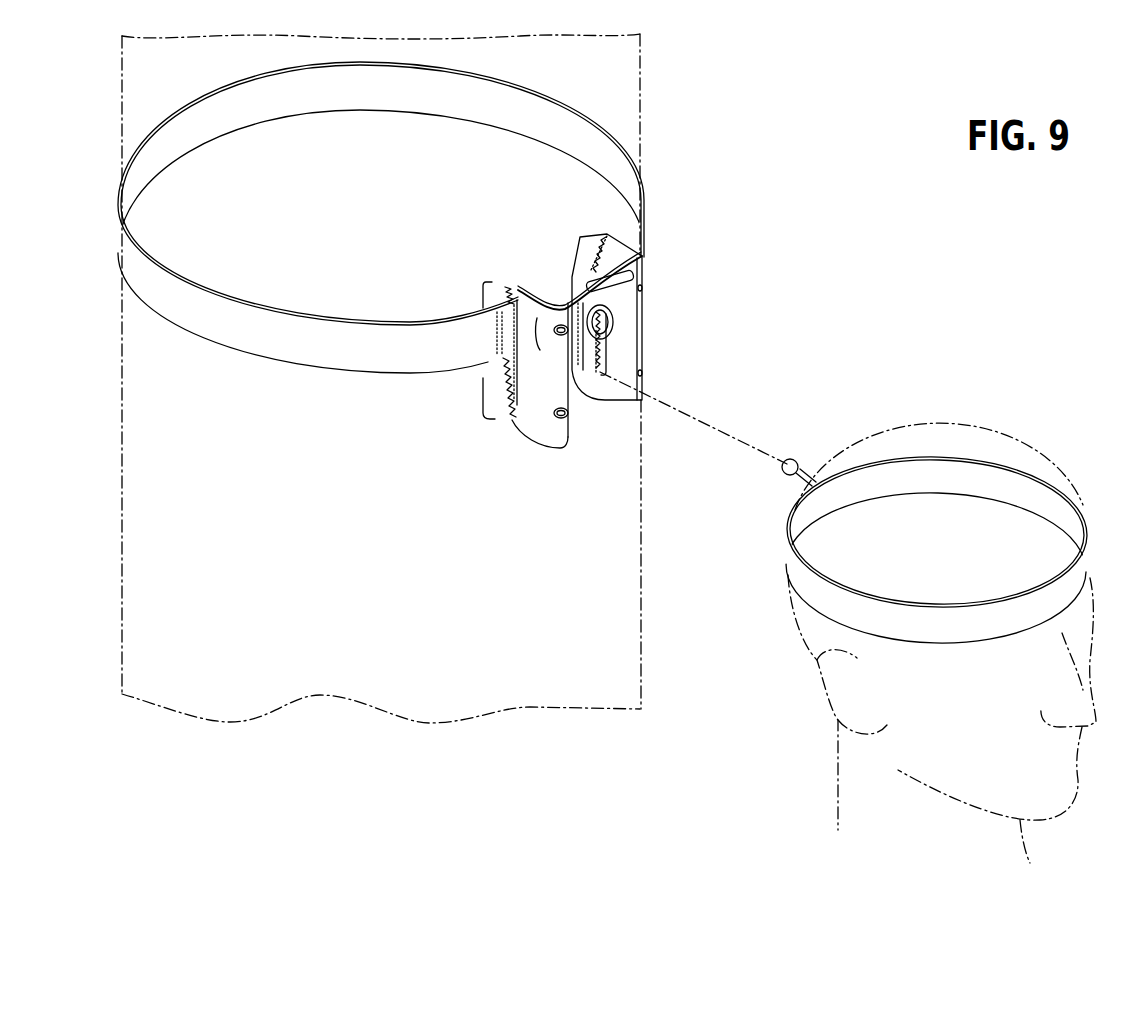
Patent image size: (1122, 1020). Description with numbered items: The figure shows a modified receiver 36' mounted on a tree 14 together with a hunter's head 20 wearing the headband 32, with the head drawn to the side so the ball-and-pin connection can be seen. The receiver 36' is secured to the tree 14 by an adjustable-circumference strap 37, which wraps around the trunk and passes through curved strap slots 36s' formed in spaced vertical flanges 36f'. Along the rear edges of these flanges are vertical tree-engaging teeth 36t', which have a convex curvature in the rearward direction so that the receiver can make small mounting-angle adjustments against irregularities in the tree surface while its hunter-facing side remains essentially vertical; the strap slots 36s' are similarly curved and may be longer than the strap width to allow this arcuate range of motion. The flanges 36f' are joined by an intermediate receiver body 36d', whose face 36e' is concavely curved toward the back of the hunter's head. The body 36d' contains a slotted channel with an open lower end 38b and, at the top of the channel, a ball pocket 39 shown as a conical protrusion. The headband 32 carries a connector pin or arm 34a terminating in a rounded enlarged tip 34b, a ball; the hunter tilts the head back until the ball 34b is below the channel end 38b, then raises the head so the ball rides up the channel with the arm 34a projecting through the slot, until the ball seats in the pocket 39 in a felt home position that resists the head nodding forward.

The tree 14 is at (640, 78).
The adjustable-circumference strap 37 is at (617, 160).
The modified receiver 36' is at (569, 251).
The intermediate receiver body 36d' is at (504, 327).
The tree-engaging teeth 36t' is at (489, 308).
The vertical flanges 36f' is at (566, 310).
The ball pocket 39 is at (603, 312).
The face 36e' is at (674, 322).
The open lower end of channel 38b is at (596, 400).
The strap slots 36s' is at (548, 423).
The head 20 is at (1025, 442).
The headband 32 is at (942, 476).
The connector pin or arm 34a is at (804, 475).
The rounded enlarged tip 34b is at (790, 458).